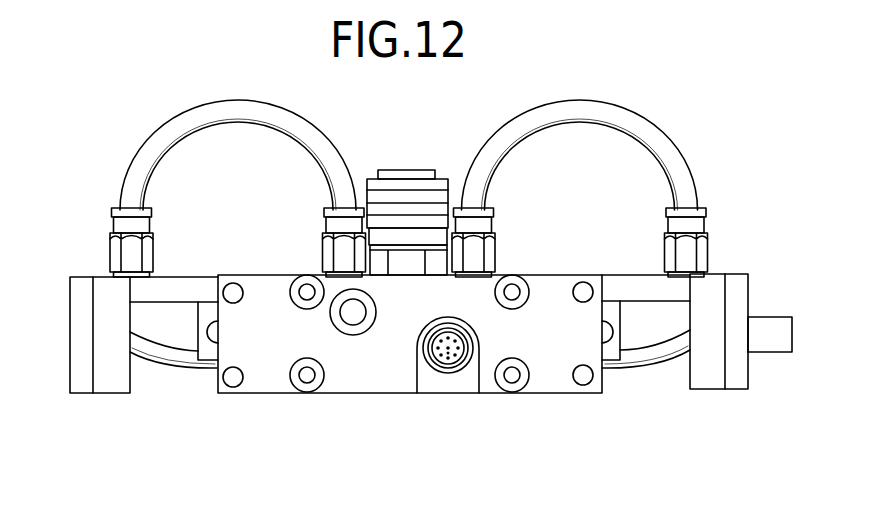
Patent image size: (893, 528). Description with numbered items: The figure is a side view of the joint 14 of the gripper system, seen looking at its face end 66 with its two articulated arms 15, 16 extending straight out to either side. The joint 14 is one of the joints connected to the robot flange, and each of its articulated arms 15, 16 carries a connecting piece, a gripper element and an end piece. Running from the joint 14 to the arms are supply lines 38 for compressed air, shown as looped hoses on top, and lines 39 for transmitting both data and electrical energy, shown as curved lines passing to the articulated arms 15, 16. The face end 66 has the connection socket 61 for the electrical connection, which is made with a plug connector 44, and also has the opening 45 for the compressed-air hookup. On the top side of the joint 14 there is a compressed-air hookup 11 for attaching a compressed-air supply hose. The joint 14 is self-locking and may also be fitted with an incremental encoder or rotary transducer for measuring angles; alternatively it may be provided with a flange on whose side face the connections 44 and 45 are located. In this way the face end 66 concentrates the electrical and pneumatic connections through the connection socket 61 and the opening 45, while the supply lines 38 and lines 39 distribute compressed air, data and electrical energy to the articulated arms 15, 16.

The supply lines 38 is at (483, 155).
The compressed-air hookup 11 is at (437, 198).
The joint 14 is at (548, 394).
The opening 45 is at (357, 318).
The connection socket 61 is at (450, 355).
The face end 66 is at (398, 326).
The articulated arm 16 is at (165, 293).
The articulated arm 15 is at (668, 293).
The lines 39 is at (182, 370).
The plug connector 44 is at (770, 323).